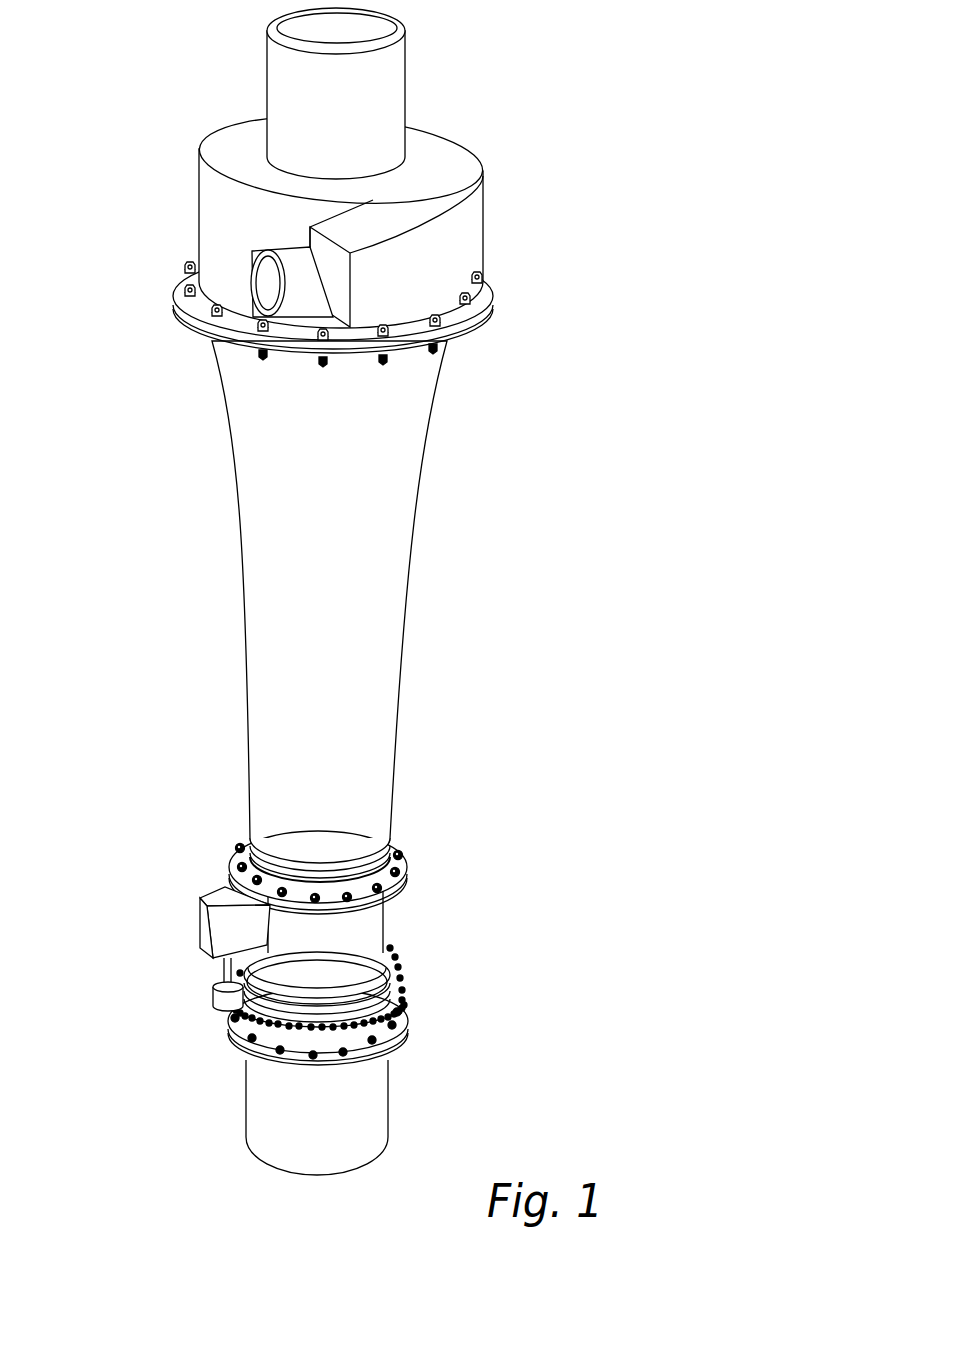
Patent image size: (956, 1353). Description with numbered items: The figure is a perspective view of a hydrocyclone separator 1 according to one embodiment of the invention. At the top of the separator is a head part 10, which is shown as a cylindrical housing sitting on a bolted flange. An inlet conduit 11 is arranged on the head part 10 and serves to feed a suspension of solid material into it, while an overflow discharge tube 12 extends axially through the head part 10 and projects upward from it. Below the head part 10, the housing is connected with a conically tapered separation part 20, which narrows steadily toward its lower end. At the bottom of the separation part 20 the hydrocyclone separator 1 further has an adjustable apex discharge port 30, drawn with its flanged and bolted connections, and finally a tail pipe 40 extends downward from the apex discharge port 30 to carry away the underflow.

The hydrocyclone separator 1 is at (577, 515).
The head part 10 is at (223, 228).
The inlet conduit 11 is at (420, 262).
The overflow discharge tube 12 is at (390, 80).
The conically tapered separation part 20 is at (375, 627).
The adjustable apex discharge port 30 is at (360, 932).
The tail pipe 40 is at (360, 1098).